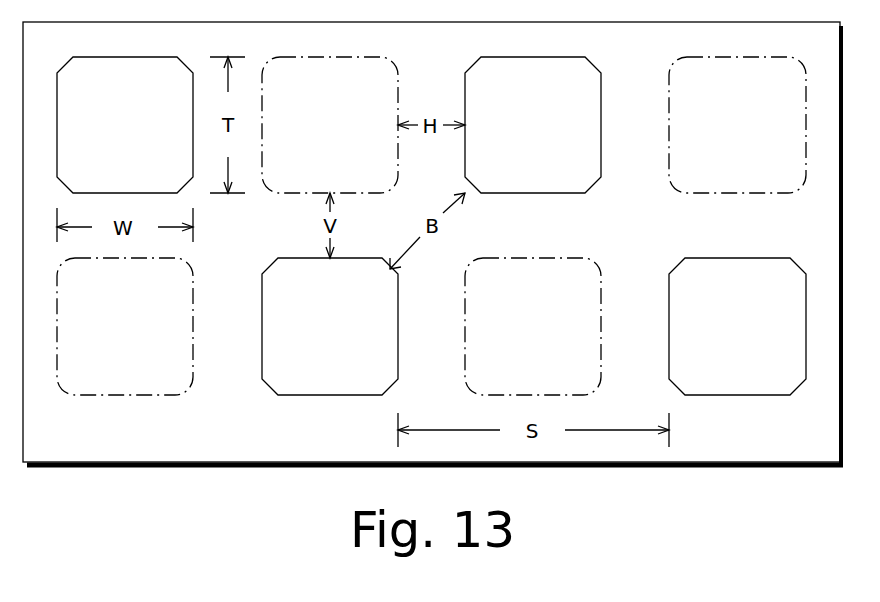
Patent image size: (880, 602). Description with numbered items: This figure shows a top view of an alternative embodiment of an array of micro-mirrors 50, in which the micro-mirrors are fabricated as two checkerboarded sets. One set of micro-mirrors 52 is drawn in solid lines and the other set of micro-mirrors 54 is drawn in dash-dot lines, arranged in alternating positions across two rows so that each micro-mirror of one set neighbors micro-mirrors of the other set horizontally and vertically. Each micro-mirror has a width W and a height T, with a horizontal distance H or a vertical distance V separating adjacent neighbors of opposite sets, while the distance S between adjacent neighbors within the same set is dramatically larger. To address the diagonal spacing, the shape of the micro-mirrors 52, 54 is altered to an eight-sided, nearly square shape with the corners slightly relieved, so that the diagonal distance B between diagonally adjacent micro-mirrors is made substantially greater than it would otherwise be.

The mesh panel 50 is at (134, 482).
The solid region 52 is at (431, 226).
The aperture region 54 is at (431, 226).